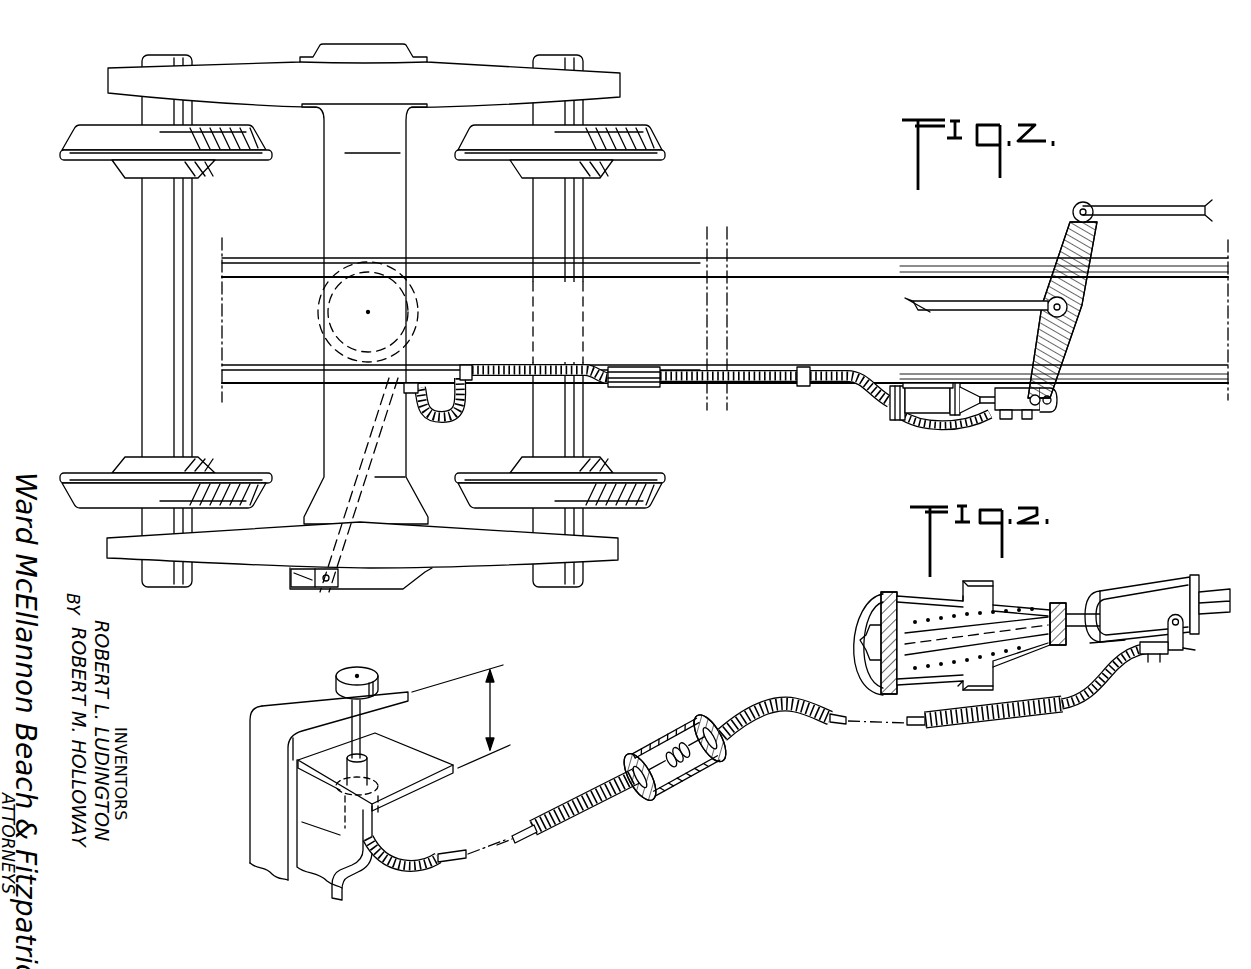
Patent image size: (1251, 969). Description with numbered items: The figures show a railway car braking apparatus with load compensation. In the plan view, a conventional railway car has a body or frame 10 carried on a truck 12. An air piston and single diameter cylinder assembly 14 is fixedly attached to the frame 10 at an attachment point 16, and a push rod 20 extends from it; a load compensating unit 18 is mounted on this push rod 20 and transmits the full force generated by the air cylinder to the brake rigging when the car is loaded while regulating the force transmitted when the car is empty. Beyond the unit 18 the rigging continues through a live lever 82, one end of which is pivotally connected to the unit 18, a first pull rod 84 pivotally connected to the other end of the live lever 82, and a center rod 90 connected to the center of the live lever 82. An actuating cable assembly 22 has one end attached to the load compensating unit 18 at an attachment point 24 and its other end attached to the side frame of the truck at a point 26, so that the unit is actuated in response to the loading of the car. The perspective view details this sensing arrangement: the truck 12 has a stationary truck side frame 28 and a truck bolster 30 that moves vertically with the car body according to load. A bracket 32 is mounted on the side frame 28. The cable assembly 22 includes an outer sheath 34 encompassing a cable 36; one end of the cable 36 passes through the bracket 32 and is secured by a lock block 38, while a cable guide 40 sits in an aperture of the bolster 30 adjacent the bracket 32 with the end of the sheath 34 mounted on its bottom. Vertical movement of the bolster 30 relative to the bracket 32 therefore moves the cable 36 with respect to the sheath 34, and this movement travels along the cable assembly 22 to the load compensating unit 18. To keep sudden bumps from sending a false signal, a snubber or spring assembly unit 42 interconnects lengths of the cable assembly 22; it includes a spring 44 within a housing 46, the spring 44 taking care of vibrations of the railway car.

In FIG. 1, the body or frame 10 is at (806, 258).
In FIG. 1, the truck 12 is at (402, 337).
In FIG. 1, the air piston and single diameter cylinder assembly 14 is at (910, 418).
In FIG. 2, the air piston and single diameter cylinder assembly 14 is at (925, 597).
In FIG. 1, the attachment point 16 is at (935, 385).
In FIG. 1, the load compensating unit 18 is at (1032, 420).
In FIG. 2, the load compensating unit 18 is at (1208, 578).
In FIG. 1, the push rod 20 is at (988, 417).
In FIG. 2, the push rod 20 is at (1076, 612).
In FIG. 1, the actuating cable assembly 22 is at (772, 380).
In FIG. 2, the actuating cable assembly 22 is at (783, 698).
In FIG. 1, the cable attachment point 24 is at (1004, 422).
In FIG. 2, the cable attachment point 24 is at (1148, 653).
In FIG. 1, the side frame attachment point 26 is at (330, 588).
In FIG. 1, the truck side frame 28 is at (257, 557).
In FIG. 2, the truck bolster 30 is at (410, 775).
In FIG. 2, the bracket 32 is at (293, 702).
In FIG. 2, the outer sheath 34 is at (560, 803).
In FIG. 2, the cable 36 is at (518, 840).
In FIG. 2, the lock block 38 is at (372, 674).
In FIG. 2, the cable guide 40 is at (365, 774).
In FIG. 1, the snubber or spring assembly unit 42 is at (643, 392).
In FIG. 2, the snubber or spring assembly unit 42 is at (703, 769).
In FIG. 2, the spring 44 is at (705, 792).
In FIG. 2, the housing 46 is at (675, 757).
In FIG. 1, the live lever 82 is at (1056, 338).
In FIG. 1, the first pull rod 84 is at (1166, 212).
In FIG. 1, the center rod 90 is at (1010, 306).